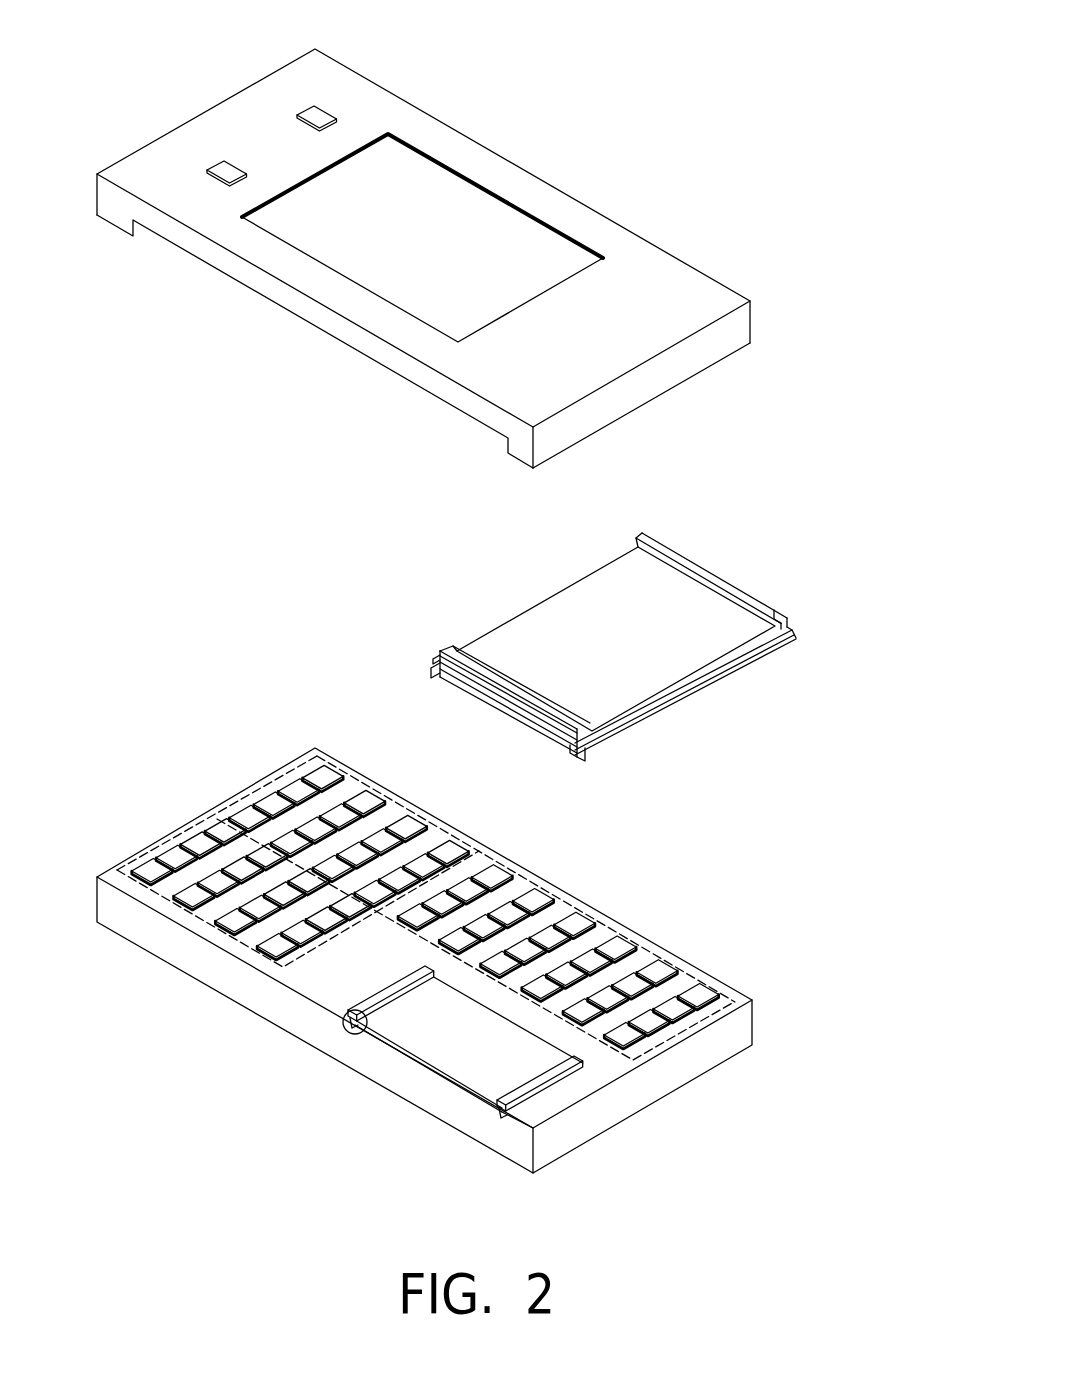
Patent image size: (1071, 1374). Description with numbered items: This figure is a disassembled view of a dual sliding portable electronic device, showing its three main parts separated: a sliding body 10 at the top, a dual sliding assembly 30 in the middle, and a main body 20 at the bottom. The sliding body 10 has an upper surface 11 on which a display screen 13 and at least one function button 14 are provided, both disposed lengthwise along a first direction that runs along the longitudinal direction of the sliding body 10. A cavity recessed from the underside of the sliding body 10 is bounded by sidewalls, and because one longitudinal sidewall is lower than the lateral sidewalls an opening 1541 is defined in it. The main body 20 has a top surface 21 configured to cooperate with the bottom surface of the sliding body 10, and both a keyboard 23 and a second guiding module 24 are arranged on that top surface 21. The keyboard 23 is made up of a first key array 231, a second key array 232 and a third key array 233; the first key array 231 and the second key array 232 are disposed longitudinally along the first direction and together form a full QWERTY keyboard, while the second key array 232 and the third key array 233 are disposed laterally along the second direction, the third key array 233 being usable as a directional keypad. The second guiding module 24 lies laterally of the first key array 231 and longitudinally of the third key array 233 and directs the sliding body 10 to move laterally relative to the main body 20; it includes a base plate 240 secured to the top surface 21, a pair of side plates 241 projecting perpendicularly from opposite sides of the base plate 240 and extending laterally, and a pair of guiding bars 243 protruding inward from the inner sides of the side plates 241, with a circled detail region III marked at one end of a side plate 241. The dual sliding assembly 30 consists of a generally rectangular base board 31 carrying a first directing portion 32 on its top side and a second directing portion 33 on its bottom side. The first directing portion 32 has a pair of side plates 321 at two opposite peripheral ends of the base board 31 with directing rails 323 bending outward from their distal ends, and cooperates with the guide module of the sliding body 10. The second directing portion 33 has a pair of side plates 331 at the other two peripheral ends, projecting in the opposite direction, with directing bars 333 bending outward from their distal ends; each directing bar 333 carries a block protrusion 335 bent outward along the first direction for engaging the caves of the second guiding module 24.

The sliding body 10 is at (459, 248).
The upper surface 11 is at (360, 112).
The display screen 13 is at (478, 208).
The function button 14 is at (312, 108).
The opening 1541 is at (333, 345).
The main body 20 is at (461, 982).
The top surface 21 is at (600, 1055).
The keyboard 23 is at (418, 899).
The first key array 231 is at (625, 960).
The second key array 232 is at (278, 790).
The third key array 233 is at (177, 843).
The second guiding module 24 is at (382, 1095).
The base plate 240 is at (445, 1050).
The side plates 241 is at (370, 1000).
The guiding bars 243 is at (353, 1027).
The detail view marker III is at (344, 1032).
The dual sliding assembly 30 is at (592, 665).
The base board 31 is at (580, 620).
The first directing portion 32 is at (731, 644).
The side plates 321 is at (767, 618).
The directing rails 323 is at (748, 593).
The second directing portion 33 is at (452, 720).
The side plates 331 is at (437, 659).
The directing bars 333 is at (433, 672).
The block protrusion 335 is at (580, 758).